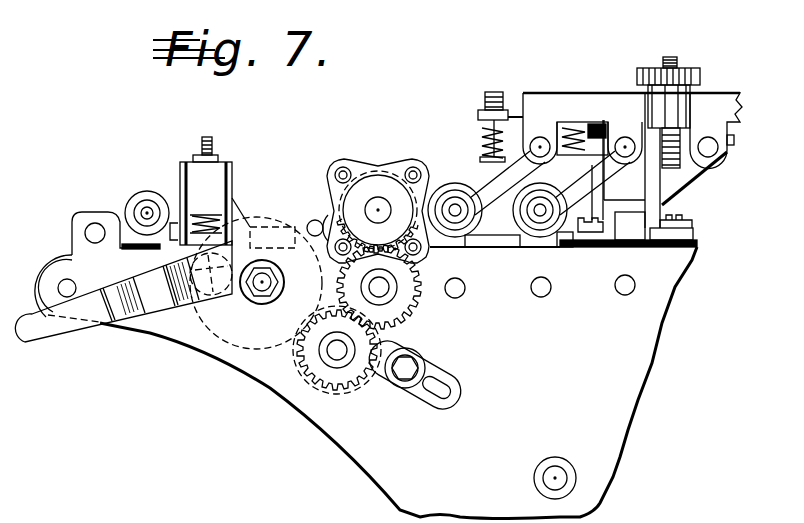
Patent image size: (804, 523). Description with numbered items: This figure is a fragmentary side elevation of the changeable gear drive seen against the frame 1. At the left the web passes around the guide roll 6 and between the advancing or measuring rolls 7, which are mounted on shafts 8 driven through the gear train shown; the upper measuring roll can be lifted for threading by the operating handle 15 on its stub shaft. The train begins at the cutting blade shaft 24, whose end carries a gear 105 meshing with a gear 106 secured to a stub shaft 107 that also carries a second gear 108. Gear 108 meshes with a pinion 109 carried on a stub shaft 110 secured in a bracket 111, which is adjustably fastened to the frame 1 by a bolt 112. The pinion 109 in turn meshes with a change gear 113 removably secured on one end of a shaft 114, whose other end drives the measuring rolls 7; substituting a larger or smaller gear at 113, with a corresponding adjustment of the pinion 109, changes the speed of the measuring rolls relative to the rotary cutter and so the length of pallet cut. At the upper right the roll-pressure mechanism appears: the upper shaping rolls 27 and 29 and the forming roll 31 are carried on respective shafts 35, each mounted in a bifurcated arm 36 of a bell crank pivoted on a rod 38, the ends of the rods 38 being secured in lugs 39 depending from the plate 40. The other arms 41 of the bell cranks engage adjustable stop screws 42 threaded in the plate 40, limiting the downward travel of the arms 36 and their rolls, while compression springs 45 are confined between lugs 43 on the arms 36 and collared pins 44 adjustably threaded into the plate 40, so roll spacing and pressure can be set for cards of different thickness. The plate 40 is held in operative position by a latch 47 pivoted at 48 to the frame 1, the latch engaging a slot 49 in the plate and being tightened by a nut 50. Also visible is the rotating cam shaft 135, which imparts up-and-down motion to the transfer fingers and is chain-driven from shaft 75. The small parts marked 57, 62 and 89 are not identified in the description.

The frame 1 is at (333, 428).
The guide roll 6 is at (50, 257).
The measuring rolls 7 is at (152, 190).
The shafts 8 is at (142, 208).
The operating handle 15 is at (40, 333).
The cutting blade shaft 24 is at (373, 208).
The shaping roll 27 is at (433, 177).
The shaping roll 29 is at (553, 246).
The forming roll 31 is at (610, 190).
The shafts 35 is at (460, 207).
The bifurcated arm 36 is at (492, 241).
The rods 38 is at (542, 137).
The lugs 39 is at (528, 140).
The plate 40 is at (523, 103).
The arms 41 is at (737, 138).
The stop screws 42 is at (598, 127).
The lugs 43 is at (480, 167).
The collared pins 44 is at (483, 127).
The compression springs 45 is at (482, 144).
The latch 47 is at (672, 60).
The pivot 48 is at (708, 166).
The slot 49 is at (673, 117).
The nut 50 is at (697, 73).
The stud 57 is at (465, 291).
The hole 62 is at (487, 250).
The shaft 75 is at (548, 297).
The hole 89 is at (622, 295).
The gear 105 is at (378, 183).
The gear 106 is at (420, 287).
The stub shaft 107 is at (398, 300).
The second gear 108 is at (380, 313).
The pinion 109 is at (343, 380).
The stub shaft 110 is at (337, 347).
The bracket 111 is at (452, 386).
The bolt 112 is at (407, 373).
The change gear 113 is at (262, 282).
The shaft 114 is at (247, 336).
The rotating shaft 135 is at (568, 463).